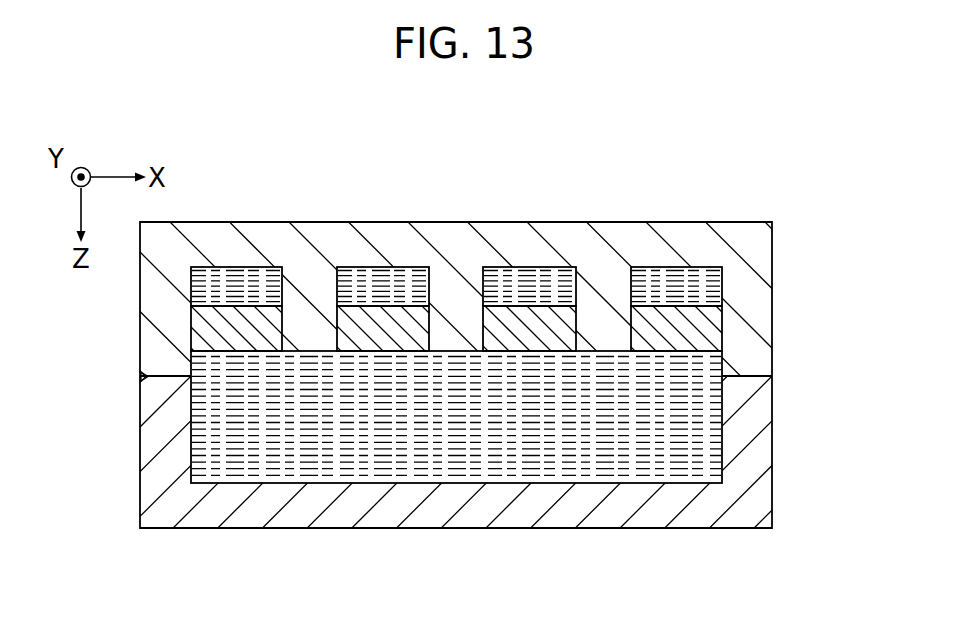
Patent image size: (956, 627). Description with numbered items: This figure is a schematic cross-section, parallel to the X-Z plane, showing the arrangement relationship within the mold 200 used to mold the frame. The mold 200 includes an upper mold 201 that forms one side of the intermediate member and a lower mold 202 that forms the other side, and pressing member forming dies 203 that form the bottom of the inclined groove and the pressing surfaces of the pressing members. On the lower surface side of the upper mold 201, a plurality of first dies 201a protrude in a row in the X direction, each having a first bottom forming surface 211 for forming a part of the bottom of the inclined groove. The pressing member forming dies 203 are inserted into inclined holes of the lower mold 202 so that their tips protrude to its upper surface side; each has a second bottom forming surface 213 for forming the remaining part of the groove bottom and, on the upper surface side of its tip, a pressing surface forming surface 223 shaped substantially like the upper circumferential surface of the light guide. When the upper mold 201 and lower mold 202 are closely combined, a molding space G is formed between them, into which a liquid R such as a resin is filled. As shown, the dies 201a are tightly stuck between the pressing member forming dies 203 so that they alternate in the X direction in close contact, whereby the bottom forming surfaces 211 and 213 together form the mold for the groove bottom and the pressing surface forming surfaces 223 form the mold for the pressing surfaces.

The mold 200 is at (695, 146).
The upper mold 201 is at (755, 263).
The first dies 201a is at (303, 265).
The lower mold 202 is at (755, 457).
The pressing member forming dies 203 is at (202, 339).
The first bottom forming surface 211 is at (307, 352).
The second bottom forming surface 213 is at (238, 352).
The pressing surface forming surface 223 is at (238, 305).
The liquid R is at (202, 428).
The molding space G is at (705, 420).